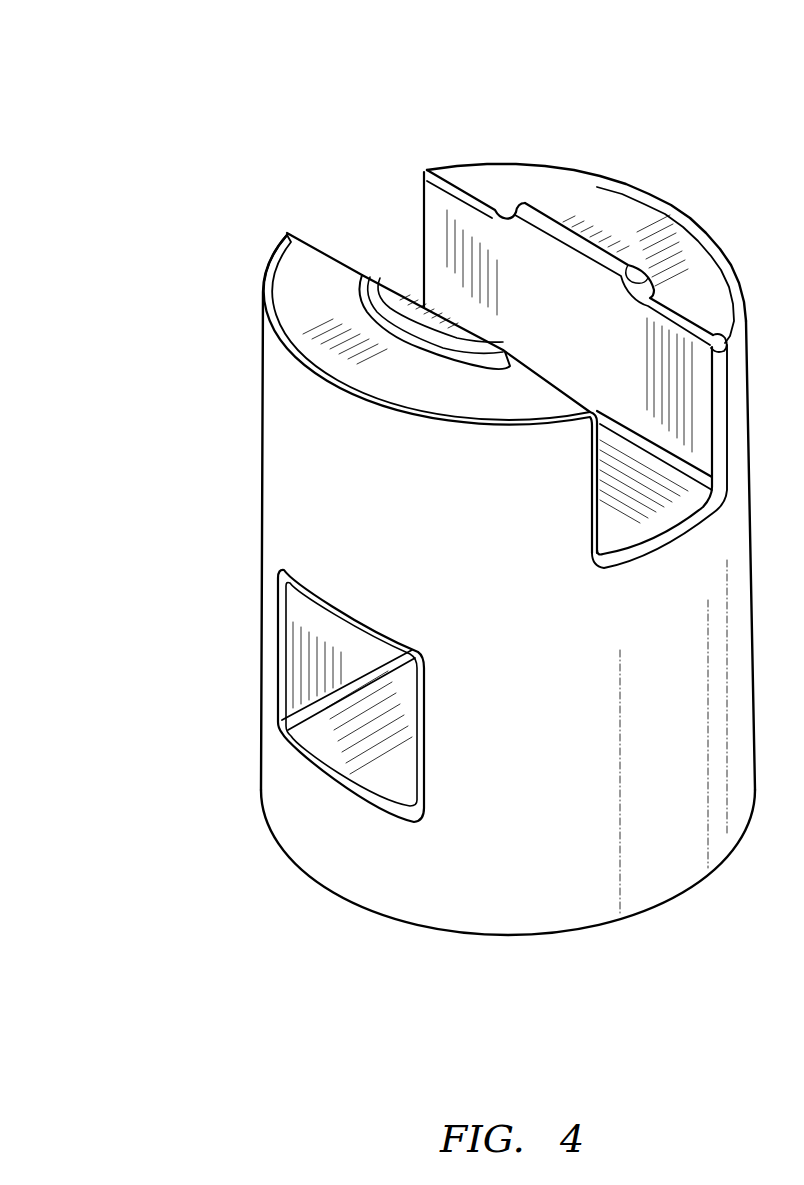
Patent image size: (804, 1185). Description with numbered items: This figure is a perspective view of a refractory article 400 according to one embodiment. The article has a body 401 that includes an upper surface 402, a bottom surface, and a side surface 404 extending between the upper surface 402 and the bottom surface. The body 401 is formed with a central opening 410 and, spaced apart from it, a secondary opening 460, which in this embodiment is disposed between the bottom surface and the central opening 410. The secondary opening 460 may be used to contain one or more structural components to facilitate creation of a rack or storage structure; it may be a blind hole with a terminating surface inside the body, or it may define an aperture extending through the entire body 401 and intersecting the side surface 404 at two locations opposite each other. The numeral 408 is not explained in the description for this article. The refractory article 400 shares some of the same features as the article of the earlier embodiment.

The refractory article 400 is at (150, 41).
The body 401 is at (283, 240).
The upper surface 402 is at (609, 203).
The side surface 404 is at (276, 533).
The bottom edge 408 is at (327, 901).
The central opening 410 is at (362, 207).
The secondary opening 460 is at (330, 724).